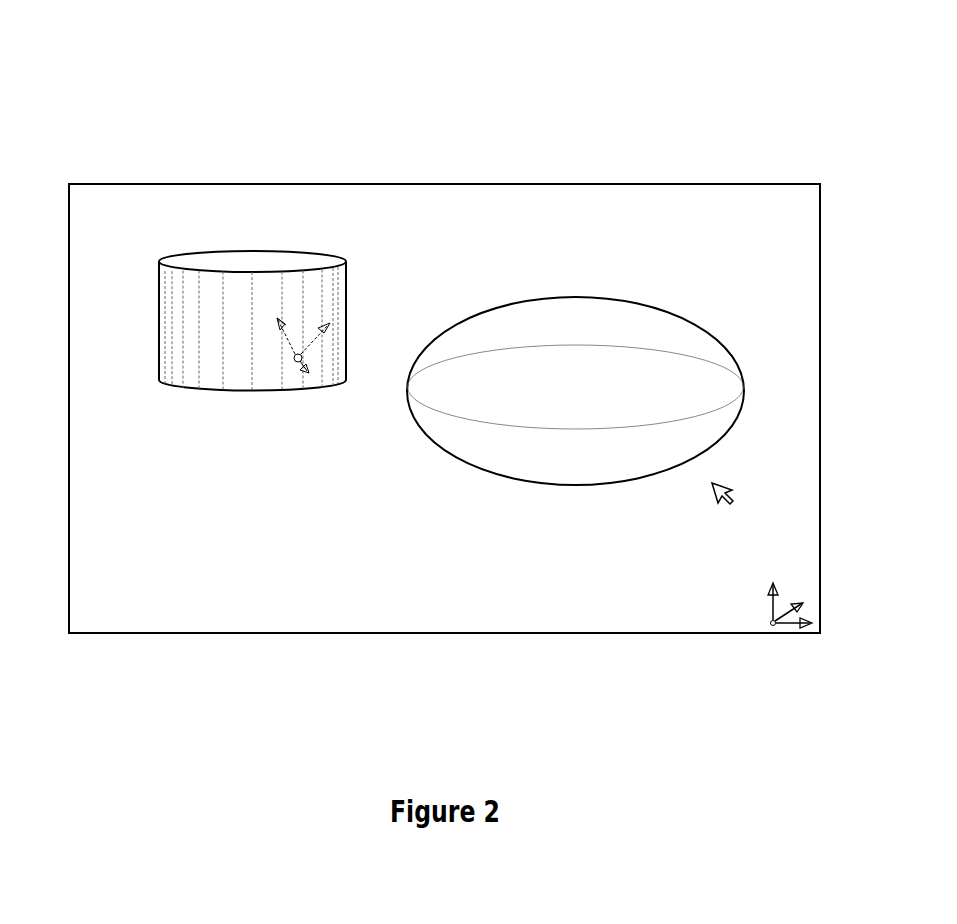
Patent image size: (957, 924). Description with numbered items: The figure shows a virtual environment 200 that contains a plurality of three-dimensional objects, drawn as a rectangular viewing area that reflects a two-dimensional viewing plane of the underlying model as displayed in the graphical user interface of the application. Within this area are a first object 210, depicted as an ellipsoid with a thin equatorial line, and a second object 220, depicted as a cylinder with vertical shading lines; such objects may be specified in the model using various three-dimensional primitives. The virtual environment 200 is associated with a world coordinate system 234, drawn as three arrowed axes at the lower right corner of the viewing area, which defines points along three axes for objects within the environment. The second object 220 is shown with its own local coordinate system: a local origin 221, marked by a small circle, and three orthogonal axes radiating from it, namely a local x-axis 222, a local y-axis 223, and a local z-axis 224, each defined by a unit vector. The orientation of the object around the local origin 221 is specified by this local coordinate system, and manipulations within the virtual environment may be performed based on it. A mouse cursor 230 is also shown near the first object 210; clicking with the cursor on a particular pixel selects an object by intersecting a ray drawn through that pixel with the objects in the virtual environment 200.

The virtual environment 200 is at (773, 104).
The first object 210 is at (552, 296).
The second object 220 is at (196, 249).
The local origin 221 is at (298, 363).
The local x-axis 222 is at (309, 374).
The local y-axis 223 is at (330, 326).
The local z-axis 224 is at (280, 324).
The mouse cursor 230 is at (742, 520).
The world coordinate system 234 is at (780, 636).